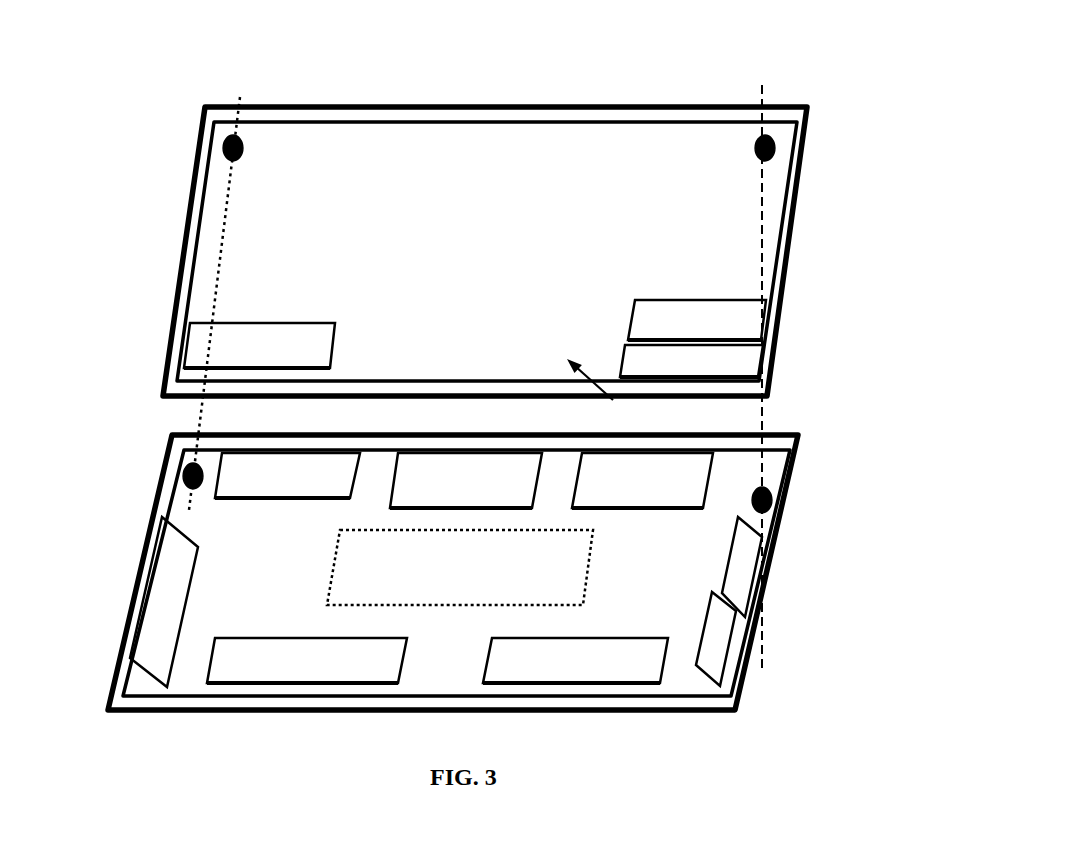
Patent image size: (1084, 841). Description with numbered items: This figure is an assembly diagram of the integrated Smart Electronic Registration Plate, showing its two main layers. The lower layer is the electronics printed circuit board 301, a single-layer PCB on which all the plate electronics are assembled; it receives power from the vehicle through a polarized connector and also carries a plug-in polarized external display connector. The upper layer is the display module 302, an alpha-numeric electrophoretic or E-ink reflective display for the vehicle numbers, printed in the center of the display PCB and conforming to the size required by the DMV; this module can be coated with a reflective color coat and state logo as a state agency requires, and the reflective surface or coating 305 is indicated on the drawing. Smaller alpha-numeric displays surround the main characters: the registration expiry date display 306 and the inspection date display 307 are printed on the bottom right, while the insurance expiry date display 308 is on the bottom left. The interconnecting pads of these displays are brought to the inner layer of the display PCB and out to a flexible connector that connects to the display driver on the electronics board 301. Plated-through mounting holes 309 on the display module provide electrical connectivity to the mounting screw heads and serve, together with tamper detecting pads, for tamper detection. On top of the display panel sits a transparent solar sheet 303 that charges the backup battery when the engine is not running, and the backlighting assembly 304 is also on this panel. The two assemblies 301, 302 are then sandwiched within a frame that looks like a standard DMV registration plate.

The electronics printed circuit board 301 is at (778, 578).
The display module 302 is at (502, 243).
The transparent solar sheet 303 is at (748, 174).
The backlighting assembly 304 is at (800, 228).
The reflective coating / reflective surface 305 is at (385, 341).
The registration expiry date display 306 is at (750, 360).
The inspection date display 307 is at (832, 383).
The insurance expiry date display 308 is at (178, 375).
The plated through mounting holes 309 is at (282, 123).